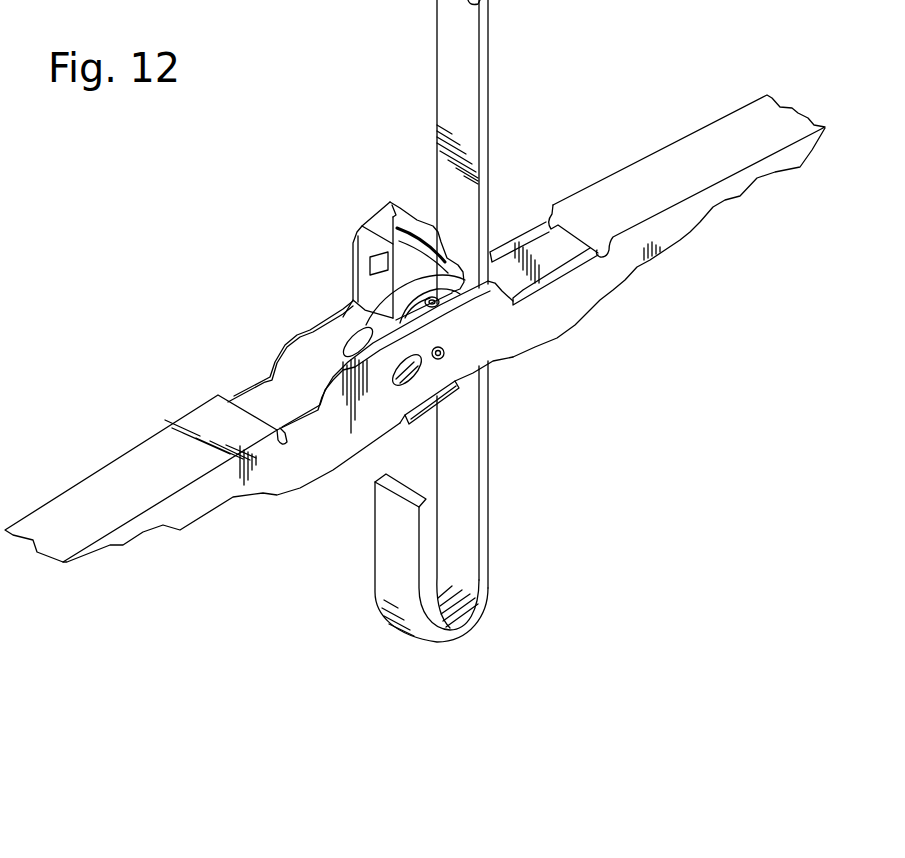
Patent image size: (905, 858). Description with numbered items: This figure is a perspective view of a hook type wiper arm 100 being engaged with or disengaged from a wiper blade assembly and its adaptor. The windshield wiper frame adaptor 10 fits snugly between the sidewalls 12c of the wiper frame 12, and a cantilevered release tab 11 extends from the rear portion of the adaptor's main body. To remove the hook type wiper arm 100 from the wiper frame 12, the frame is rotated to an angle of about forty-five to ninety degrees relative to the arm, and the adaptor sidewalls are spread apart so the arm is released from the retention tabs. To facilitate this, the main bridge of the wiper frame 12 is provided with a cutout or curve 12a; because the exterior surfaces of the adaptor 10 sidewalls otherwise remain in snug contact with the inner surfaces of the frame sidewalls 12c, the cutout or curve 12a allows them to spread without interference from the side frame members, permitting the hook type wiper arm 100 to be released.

The hook type wiper arm 100 is at (463, 87).
The wiper frame 12 is at (640, 172).
The sidewalls of wiper frame 12c is at (563, 315).
The cutout or curve 12a is at (400, 440).
The cantilevered release tab 11 is at (393, 227).
The windshield wiper frame adaptor 10 is at (412, 281).